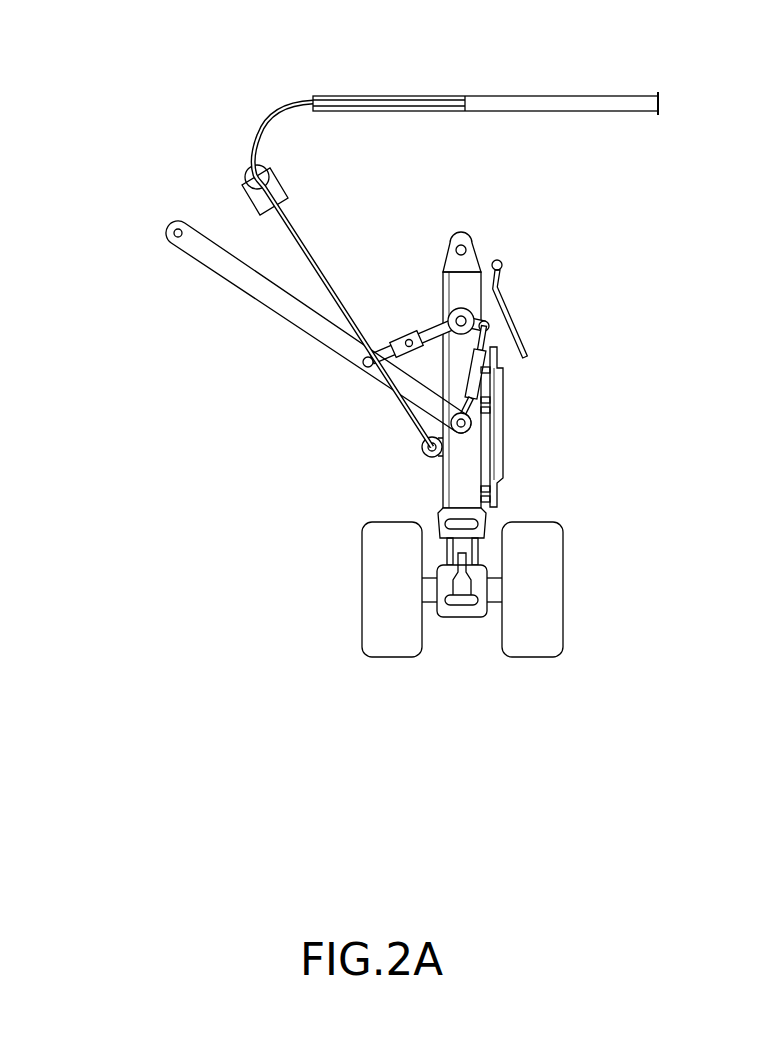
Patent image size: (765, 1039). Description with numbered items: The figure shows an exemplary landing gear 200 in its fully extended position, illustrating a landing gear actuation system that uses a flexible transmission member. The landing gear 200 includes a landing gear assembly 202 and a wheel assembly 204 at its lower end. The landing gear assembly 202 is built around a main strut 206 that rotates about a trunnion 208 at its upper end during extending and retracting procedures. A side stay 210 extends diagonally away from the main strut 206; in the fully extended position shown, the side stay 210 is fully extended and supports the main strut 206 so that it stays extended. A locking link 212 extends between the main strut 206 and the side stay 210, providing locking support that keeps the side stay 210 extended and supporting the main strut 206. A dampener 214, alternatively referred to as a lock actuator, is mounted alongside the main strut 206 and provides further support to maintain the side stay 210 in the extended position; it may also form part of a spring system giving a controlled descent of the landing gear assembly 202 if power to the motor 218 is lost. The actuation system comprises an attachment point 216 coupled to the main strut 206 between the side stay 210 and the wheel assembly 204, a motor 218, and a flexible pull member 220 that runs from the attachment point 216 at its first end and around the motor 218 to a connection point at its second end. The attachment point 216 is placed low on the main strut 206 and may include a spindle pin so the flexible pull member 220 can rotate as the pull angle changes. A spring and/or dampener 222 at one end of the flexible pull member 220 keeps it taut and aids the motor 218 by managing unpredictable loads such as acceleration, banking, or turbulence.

The landing gear 200 is at (86, 141).
The landing gear assembly 202 is at (572, 426).
The wheel assembly 204 is at (602, 582).
The main strut 206 is at (484, 477).
The trunnion 208 is at (470, 247).
The side stay 210 is at (273, 311).
The locking link 212 is at (428, 326).
The dampener 214 is at (484, 371).
The attachment point 216 is at (423, 446).
The motor 218 is at (245, 195).
The flexible pull member 220 is at (300, 255).
The spring and/or dampener 222 is at (426, 95).